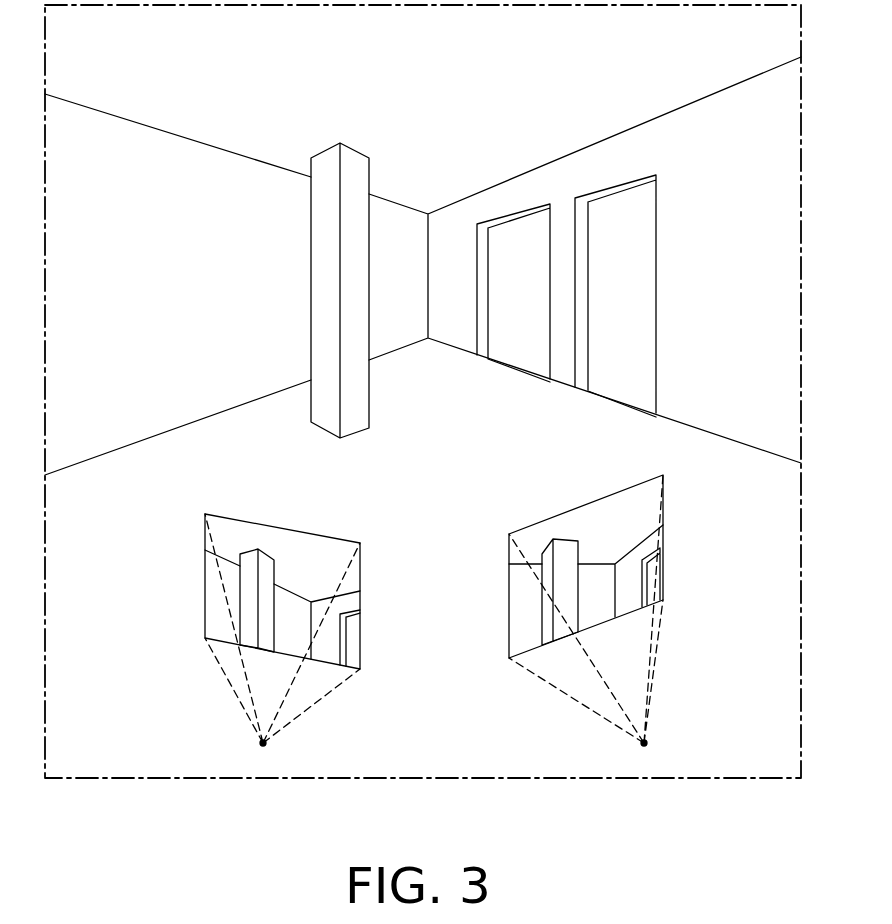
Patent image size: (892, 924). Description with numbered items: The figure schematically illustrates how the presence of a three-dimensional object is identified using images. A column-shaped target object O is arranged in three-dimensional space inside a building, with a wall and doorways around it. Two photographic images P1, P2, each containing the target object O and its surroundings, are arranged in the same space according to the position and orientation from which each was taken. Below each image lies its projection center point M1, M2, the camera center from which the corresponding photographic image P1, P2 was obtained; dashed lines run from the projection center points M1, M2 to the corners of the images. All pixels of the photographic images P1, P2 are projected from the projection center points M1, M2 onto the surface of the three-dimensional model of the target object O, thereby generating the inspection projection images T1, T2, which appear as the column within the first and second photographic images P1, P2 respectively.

The target object O is at (350, 157).
The photographic image P1 is at (207, 575).
The photographic image P2 is at (663, 515).
The inspection projection image T1 is at (264, 570).
The inspection projection image T2 is at (566, 605).
The projection center point M1 is at (282, 642).
The projection center point M2 is at (605, 622).